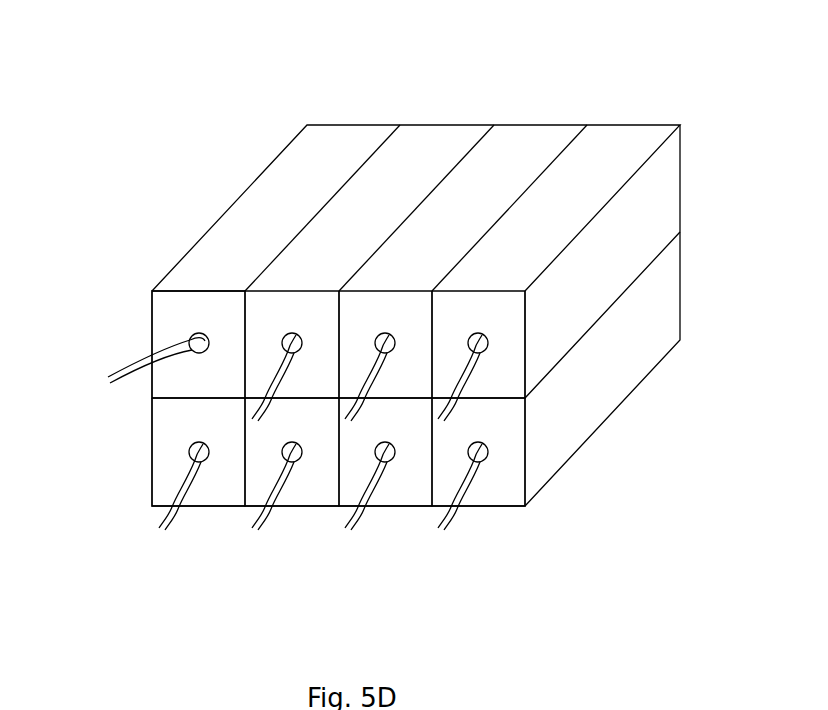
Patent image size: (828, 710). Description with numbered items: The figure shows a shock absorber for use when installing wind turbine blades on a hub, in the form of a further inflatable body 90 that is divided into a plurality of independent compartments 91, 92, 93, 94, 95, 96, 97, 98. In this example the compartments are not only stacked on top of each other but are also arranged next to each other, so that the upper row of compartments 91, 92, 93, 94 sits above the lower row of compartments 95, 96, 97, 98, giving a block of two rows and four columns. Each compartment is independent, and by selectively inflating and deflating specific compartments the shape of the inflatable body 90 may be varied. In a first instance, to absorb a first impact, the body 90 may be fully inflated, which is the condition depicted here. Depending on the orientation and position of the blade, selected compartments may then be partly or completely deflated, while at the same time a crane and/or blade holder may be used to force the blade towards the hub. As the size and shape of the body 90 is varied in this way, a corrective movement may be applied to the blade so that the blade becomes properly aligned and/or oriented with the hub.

The inflatable body 90 is at (235, 84).
The independent compartment 91 is at (329, 146).
The independent compartment 92 is at (423, 146).
The independent compartment 93 is at (523, 147).
The independent compartment 94 is at (625, 147).
The independent compartment 95 is at (165, 440).
The independent compartment 96 is at (308, 480).
The independent compartment 97 is at (410, 483).
The independent compartment 98 is at (485, 487).